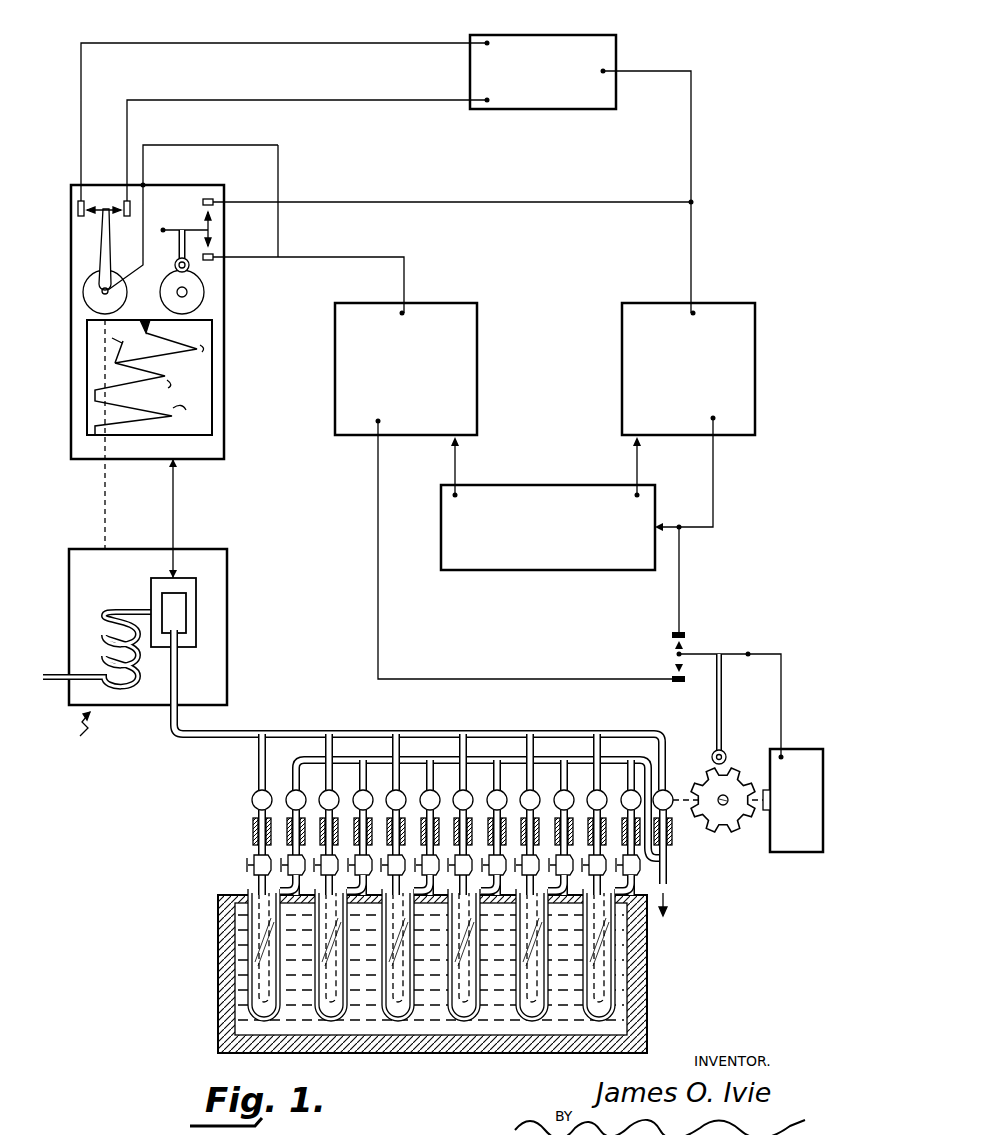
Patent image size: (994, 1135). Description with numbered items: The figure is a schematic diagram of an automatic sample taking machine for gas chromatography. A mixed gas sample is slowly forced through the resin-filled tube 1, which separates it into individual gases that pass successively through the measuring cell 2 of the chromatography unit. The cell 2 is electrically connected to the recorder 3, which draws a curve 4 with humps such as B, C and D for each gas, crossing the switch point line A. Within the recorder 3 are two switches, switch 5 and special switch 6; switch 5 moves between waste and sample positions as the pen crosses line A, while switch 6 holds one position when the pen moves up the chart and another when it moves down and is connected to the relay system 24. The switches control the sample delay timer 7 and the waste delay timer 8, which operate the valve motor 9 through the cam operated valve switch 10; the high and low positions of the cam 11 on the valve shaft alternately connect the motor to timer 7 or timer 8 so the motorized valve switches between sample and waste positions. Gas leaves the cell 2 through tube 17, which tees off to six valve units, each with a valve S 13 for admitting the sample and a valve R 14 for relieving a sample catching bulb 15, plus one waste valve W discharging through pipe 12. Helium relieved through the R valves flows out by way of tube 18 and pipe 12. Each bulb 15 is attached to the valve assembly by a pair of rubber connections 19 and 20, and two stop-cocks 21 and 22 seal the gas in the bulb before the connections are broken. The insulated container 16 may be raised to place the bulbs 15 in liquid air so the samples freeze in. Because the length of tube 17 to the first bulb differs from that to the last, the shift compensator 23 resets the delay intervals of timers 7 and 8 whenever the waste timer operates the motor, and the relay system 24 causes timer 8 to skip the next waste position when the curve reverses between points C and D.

The tube 1 is at (48, 677).
The measuring cell 2 is at (183, 640).
The recorder 3 is at (226, 400).
The curve 4 is at (177, 358).
The switch 5 is at (188, 230).
The special switch 6 is at (100, 258).
The sample delay timer 7 is at (477, 352).
The waste delay timer 8 is at (622, 358).
The valve motor 9 is at (808, 749).
The cam operated valve switch 10 is at (714, 691).
The cam 11 is at (733, 826).
The pipe 12 is at (668, 870).
The valve S 13 is at (417, 814).
The valve R 14 is at (454, 827).
The sample catching bulb 15 is at (431, 984).
The insulated container 16 is at (218, 936).
The tube 17 is at (289, 731).
The tube 18 is at (345, 760).
The rubber connection 19 is at (489, 827).
The rubber connection 20 is at (444, 809).
The stop-cock 21 is at (429, 858).
The stop-cock 22 is at (455, 880).
The shift compensator 23 is at (532, 485).
The relay system 24 is at (529, 35).